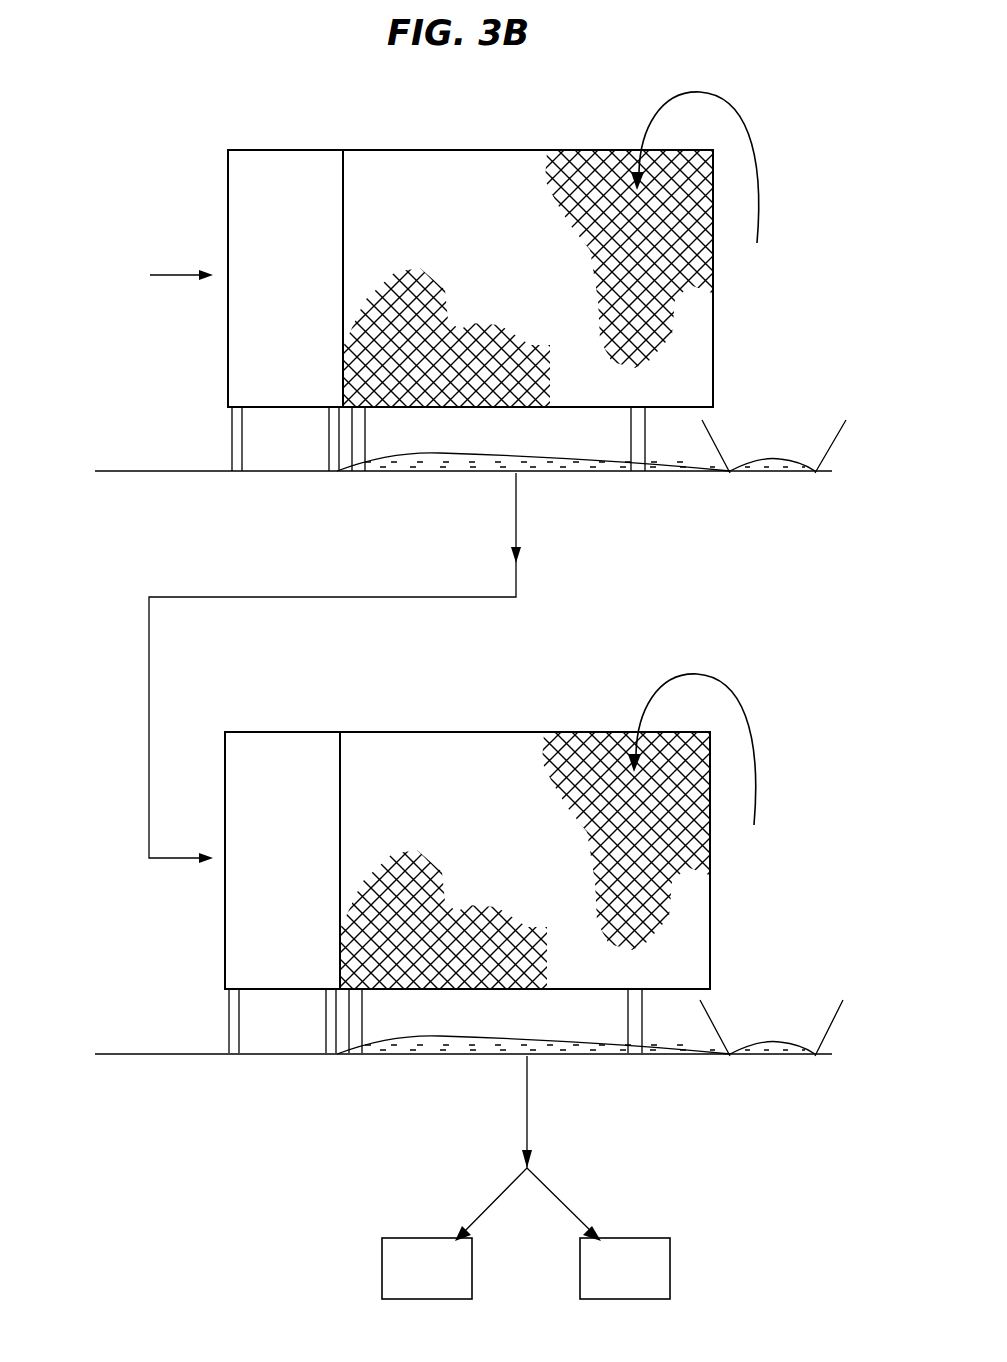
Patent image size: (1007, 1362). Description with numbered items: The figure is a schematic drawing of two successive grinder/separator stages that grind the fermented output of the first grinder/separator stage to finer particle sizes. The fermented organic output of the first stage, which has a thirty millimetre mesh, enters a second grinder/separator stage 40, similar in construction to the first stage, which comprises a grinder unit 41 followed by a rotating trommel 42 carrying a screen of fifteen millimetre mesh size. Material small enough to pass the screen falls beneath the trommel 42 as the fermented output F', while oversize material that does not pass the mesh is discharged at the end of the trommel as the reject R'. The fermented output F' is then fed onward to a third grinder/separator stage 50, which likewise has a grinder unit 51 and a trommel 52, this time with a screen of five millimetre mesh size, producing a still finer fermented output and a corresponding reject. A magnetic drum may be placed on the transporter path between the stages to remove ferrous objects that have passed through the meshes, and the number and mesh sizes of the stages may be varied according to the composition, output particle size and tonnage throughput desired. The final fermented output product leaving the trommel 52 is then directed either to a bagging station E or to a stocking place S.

The second grinder/separator stage 40 is at (488, 130).
The grinder unit 41 is at (301, 256).
The trommel 42 is at (506, 256).
The third grinder/separator stage 50 is at (488, 713).
The grinder unit 51 is at (282, 860).
The trommel 52 is at (525, 860).
The fermented output of stage 40 F' is at (533, 498).
The reject of stage 40 R' is at (774, 434).
The bagging station E is at (427, 1268).
The stocking place S is at (625, 1268).